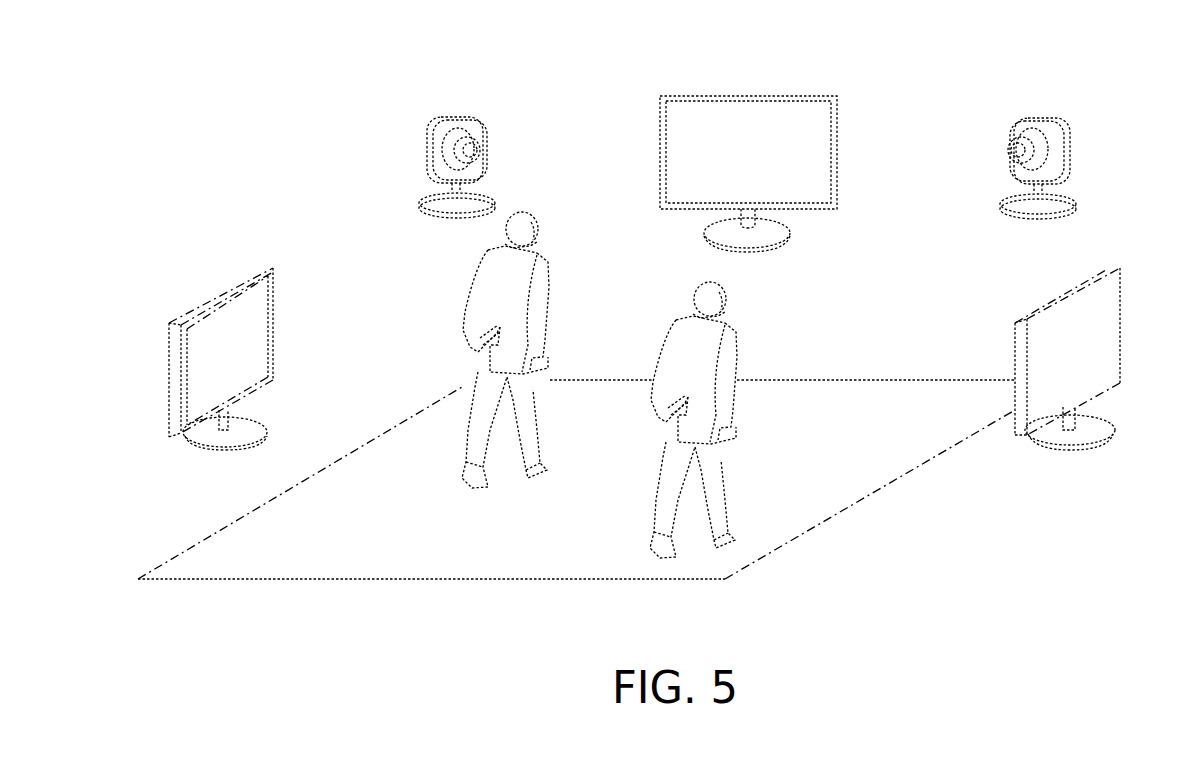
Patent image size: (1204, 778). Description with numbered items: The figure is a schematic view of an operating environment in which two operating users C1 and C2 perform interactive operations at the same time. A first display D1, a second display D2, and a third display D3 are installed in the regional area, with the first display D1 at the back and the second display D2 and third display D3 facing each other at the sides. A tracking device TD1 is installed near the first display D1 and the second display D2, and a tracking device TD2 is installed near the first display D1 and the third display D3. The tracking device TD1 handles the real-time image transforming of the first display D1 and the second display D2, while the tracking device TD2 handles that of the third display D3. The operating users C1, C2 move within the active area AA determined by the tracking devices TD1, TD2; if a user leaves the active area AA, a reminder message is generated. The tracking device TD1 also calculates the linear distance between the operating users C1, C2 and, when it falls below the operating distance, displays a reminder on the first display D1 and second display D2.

The active area AA is at (866, 521).
The first display D1 is at (747, 77).
The second display D2 is at (1100, 253).
The third display D3 is at (210, 265).
The tracking device TD1 is at (1042, 87).
The tracking device TD2 is at (450, 103).
The operating user C1 is at (747, 312).
The operating user C2 is at (553, 242).